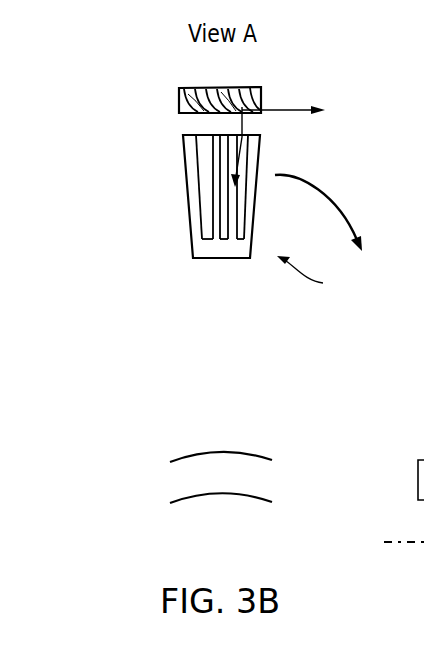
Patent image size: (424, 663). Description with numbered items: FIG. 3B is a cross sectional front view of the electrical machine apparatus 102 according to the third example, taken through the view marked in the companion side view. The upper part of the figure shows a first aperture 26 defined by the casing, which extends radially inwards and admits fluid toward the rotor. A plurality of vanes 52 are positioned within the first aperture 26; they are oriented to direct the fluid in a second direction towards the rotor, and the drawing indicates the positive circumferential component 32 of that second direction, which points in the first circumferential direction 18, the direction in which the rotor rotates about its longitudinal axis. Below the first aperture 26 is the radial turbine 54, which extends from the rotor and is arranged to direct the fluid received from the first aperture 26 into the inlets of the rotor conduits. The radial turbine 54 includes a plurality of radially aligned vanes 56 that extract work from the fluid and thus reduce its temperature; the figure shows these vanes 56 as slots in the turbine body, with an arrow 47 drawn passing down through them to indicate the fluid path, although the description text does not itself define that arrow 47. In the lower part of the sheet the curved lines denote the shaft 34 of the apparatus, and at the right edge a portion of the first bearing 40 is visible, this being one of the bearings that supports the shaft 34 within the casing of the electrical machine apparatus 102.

The first aperture 26 is at (170, 77).
The vane 52 is at (248, 89).
The positive circumferential component 32 is at (298, 105).
The flow arrow 47 is at (243, 122).
The radial turbine 54 is at (166, 229).
The radially aligned vane 56 is at (241, 241).
The first circumferential direction 18 is at (355, 220).
The electrical machine apparatus 102 is at (323, 277).
The shaft 34 is at (240, 480).
The first bearing 40 is at (404, 468).